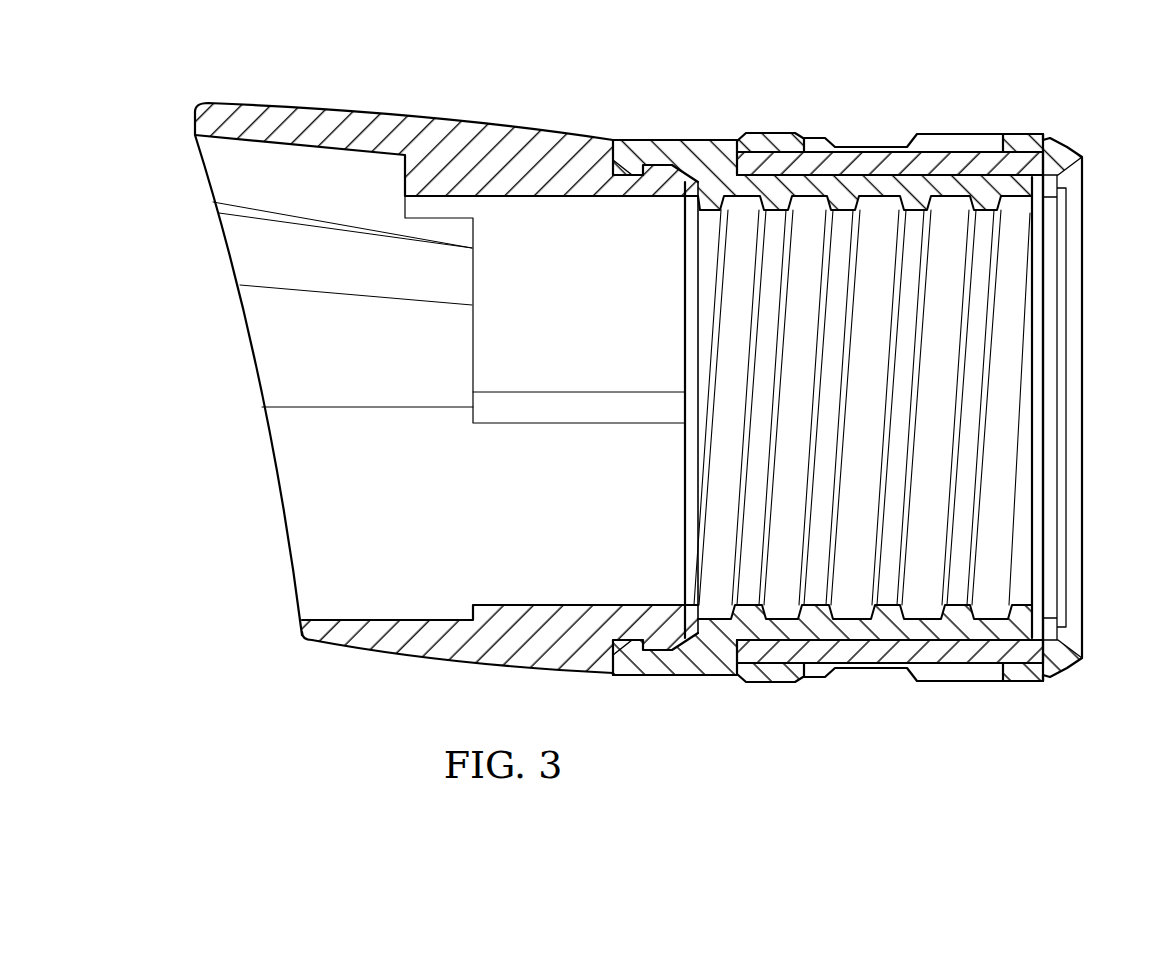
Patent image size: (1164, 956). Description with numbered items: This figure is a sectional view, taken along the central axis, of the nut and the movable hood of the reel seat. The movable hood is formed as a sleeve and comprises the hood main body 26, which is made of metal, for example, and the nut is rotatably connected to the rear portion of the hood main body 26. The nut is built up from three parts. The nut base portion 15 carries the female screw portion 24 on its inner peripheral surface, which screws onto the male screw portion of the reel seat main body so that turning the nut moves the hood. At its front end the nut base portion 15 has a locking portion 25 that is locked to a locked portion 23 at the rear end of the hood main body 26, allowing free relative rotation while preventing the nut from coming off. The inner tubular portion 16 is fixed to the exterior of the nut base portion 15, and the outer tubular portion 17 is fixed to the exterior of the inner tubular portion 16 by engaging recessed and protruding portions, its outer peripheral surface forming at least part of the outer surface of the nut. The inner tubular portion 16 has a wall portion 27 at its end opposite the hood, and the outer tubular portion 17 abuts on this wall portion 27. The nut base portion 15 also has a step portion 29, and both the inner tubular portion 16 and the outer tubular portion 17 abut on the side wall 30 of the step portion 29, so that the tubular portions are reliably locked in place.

The nut base portion 15 is at (715, 157).
The inner tubular portion 16 is at (932, 163).
The outer tubular portion 17 is at (793, 138).
The locked portion 23 is at (673, 187).
The female screw portion 24 is at (770, 297).
The locking portion 25 is at (628, 163).
The hood main body 26 is at (527, 133).
The wall portion 27 is at (1012, 145).
The step portion 29 is at (806, 142).
The side wall 30 is at (903, 373).